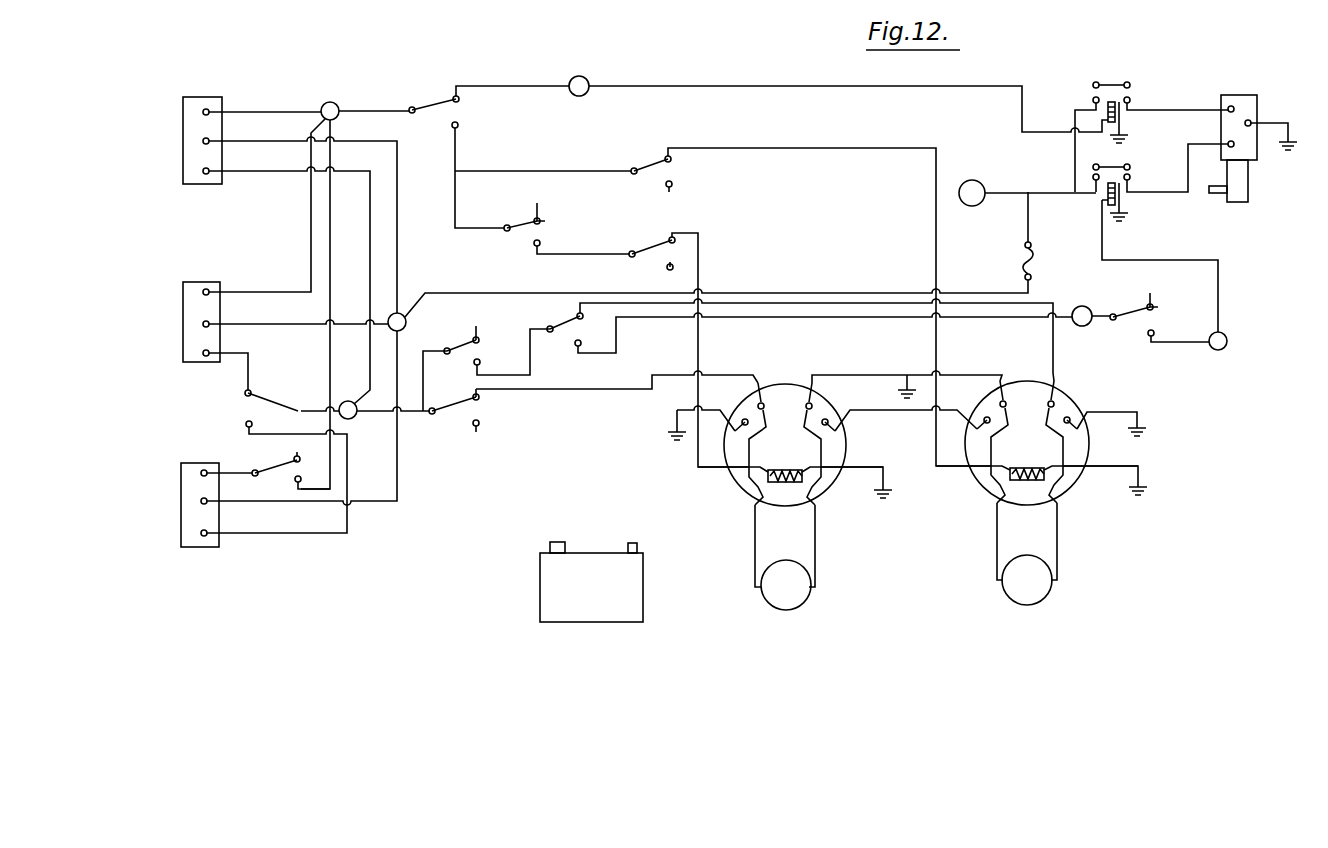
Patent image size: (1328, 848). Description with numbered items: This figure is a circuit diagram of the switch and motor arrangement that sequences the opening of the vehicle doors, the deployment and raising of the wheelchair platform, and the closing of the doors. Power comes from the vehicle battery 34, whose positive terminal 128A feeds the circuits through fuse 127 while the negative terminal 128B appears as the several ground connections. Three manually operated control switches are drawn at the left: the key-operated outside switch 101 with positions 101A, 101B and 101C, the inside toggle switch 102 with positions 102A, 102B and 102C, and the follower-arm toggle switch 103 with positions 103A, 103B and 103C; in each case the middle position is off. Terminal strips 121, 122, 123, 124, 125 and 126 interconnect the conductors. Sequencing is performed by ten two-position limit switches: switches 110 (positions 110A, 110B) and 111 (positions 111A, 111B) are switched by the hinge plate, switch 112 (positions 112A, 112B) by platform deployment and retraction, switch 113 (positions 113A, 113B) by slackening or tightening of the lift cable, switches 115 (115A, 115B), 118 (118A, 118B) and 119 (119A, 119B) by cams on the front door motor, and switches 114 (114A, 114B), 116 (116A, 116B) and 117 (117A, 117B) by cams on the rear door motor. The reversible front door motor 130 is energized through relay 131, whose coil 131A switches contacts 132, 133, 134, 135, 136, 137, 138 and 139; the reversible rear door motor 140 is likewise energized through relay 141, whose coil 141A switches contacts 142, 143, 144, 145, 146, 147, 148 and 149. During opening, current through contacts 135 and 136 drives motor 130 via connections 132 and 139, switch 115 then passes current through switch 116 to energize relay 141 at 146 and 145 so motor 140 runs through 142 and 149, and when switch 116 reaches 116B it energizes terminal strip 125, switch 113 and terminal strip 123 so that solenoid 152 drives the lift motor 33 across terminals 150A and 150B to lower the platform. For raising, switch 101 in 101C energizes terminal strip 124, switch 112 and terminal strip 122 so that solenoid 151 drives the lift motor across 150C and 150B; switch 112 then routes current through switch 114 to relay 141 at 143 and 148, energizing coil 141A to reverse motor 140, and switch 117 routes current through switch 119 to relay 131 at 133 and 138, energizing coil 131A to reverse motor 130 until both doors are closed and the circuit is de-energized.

The lift motor 33 is at (1255, 95).
The vehicle battery 34 is at (540, 586).
The control switch 101 is at (205, 97).
The switch position 101A is at (203, 171).
The switch position 101B is at (203, 141).
The switch position 101C is at (203, 112).
The control switch 102 is at (200, 282).
The switch position 102A is at (203, 353).
The switch position 102B is at (203, 324).
The switch position 102C is at (203, 292).
The control switch 103 is at (195, 463).
The switch position 103A is at (201, 533).
The switch position 103B is at (201, 501).
The switch position 103C is at (201, 473).
The limit switch 110 is at (255, 471).
The limit switch position 110A is at (297, 456).
The limit switch position 110B is at (298, 482).
The limit switch 111 is at (270, 400).
The limit switch position 111A is at (245, 393).
The limit switch position 111B is at (246, 425).
The limit switch 112 is at (434, 107).
The limit switch position 112A is at (459, 102).
The limit switch position 112B is at (458, 128).
The limit switch 113 is at (1135, 296).
The limit switch position 113A is at (1152, 306).
The limit switch position 113B is at (1154, 333).
The limit switch 114 is at (648, 152).
The limit switch position 114A is at (672, 159).
The limit switch position 114B is at (672, 186).
The limit switch 115 is at (448, 338).
The limit switch position 115A is at (479, 340).
The limit switch position 115B is at (480, 362).
The limit switch 116 is at (549, 326).
The limit switch position 116A is at (577, 315).
The limit switch position 116B is at (578, 346).
The limit switch 117 is at (520, 213).
The limit switch position 117A is at (542, 218).
The limit switch position 117B is at (541, 244).
The limit switch 118 is at (456, 392).
The limit switch position 118A is at (480, 398).
The limit switch position 118B is at (479, 426).
The limit switch 119 is at (640, 236).
The limit switch position 119A is at (672, 236).
The limit switch position 119B is at (668, 270).
The terminal strip 121 is at (403, 315).
The terminal strip 122 is at (588, 80).
The terminal strip 123 is at (1227, 341).
The terminal strip 124 is at (326, 103).
The terminal strip 125 is at (1080, 306).
The terminal strip 126 is at (352, 402).
The fuse 127 is at (1025, 258).
The positive terminal 128A is at (966, 182).
The negative terminal 128B is at (668, 432).
The front door motor 130 is at (808, 598).
The relay 131 is at (740, 480).
The relay coil 131A is at (805, 448).
The relay contact 132 is at (755, 505).
The relay contact 133 is at (730, 470).
The relay contact 134 is at (735, 412).
The relay contact 135 is at (760, 400).
The relay contact 136 is at (812, 400).
The relay contact 137 is at (840, 428).
The relay contact 138 is at (845, 470).
The relay contact 139 is at (817, 505).
The rear door motor 140 is at (1048, 595).
The relay 141 is at (985, 488).
The relay coil 141A is at (1047, 446).
The relay contact 142 is at (1000, 503).
The relay contact 143 is at (970, 475).
The relay contact 144 is at (972, 410).
The relay contact 145 is at (1003, 382).
The relay contact 146 is at (1052, 390).
The relay contact 147 is at (1088, 410).
The relay contact 148 is at (1088, 470).
The relay contact 149 is at (1060, 503).
The lift motor terminal 150A is at (1228, 140).
The lift motor terminal 150B is at (1252, 123).
The lift motor terminal 150C is at (1229, 106).
The solenoid 151 is at (1095, 110).
The solenoid 152 is at (1103, 195).